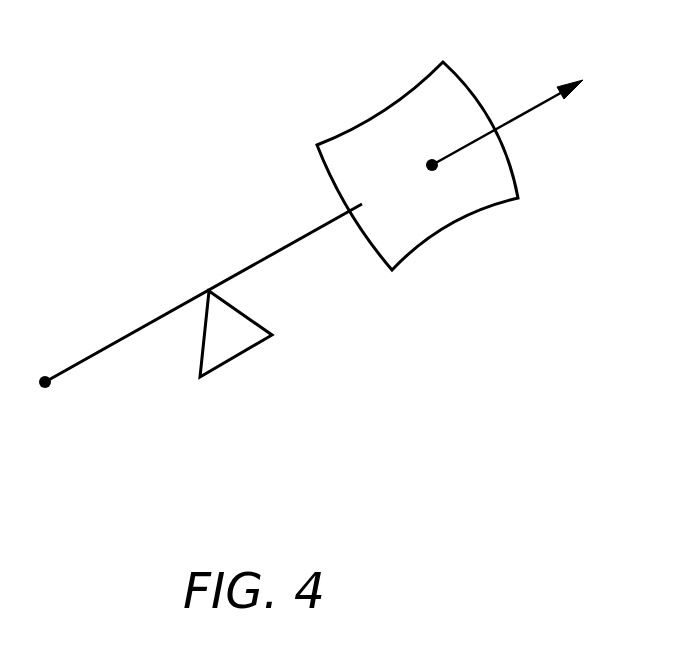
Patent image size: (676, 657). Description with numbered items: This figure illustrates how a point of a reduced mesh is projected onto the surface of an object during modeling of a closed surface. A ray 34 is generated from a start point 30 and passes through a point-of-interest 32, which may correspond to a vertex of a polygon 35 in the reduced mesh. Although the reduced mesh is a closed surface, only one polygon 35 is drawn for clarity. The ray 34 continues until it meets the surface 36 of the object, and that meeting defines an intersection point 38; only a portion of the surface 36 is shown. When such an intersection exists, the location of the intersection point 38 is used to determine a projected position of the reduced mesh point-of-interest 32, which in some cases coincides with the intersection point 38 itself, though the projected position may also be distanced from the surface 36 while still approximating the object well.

The start point 30 is at (50, 384).
The point-of-interest 32 is at (209, 292).
The ray 34 is at (128, 337).
The polygon 35 is at (235, 360).
The surface 36 is at (392, 105).
The intersection point 38 is at (438, 167).